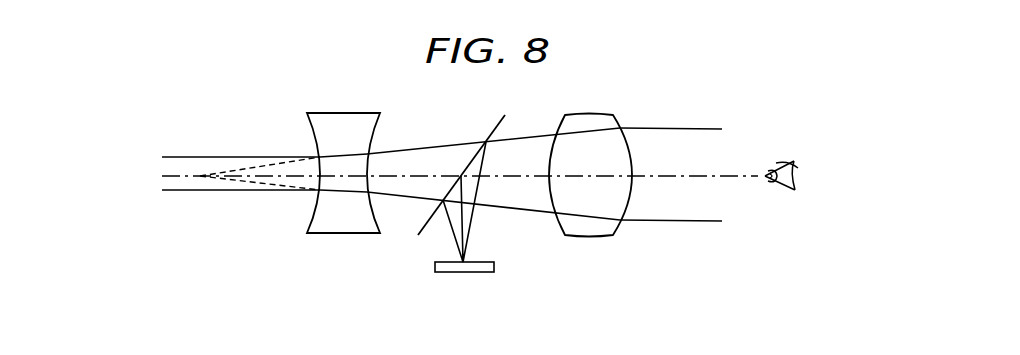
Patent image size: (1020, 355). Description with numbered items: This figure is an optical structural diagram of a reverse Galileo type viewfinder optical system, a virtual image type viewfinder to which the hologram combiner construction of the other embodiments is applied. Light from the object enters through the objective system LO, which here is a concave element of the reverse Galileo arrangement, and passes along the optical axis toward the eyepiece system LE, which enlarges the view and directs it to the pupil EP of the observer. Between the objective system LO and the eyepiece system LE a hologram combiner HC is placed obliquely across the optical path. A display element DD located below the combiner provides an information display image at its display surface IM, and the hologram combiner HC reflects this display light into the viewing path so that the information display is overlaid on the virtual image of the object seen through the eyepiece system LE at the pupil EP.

The objective system LO is at (343, 113).
The hologram combiner HC is at (492, 123).
The eyepiece system LE is at (587, 115).
The display surface IM is at (483, 263).
The display device DD is at (485, 272).
The pupil EP is at (783, 188).